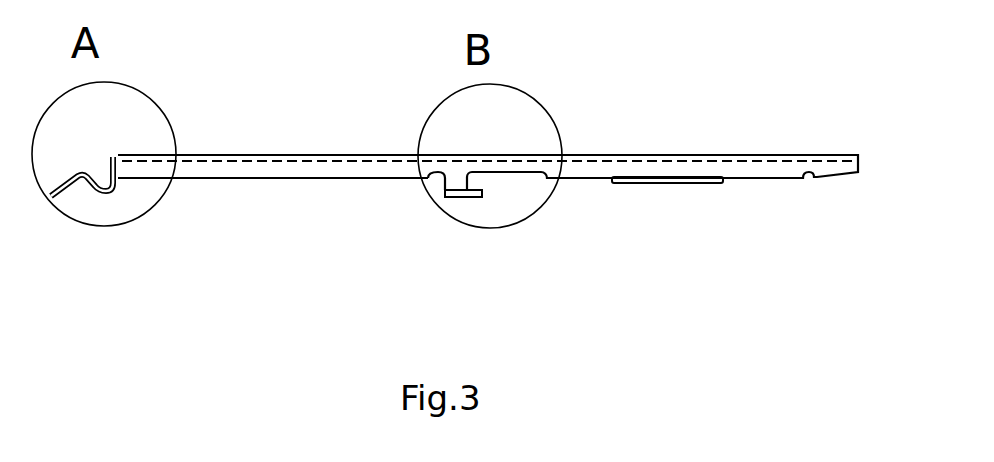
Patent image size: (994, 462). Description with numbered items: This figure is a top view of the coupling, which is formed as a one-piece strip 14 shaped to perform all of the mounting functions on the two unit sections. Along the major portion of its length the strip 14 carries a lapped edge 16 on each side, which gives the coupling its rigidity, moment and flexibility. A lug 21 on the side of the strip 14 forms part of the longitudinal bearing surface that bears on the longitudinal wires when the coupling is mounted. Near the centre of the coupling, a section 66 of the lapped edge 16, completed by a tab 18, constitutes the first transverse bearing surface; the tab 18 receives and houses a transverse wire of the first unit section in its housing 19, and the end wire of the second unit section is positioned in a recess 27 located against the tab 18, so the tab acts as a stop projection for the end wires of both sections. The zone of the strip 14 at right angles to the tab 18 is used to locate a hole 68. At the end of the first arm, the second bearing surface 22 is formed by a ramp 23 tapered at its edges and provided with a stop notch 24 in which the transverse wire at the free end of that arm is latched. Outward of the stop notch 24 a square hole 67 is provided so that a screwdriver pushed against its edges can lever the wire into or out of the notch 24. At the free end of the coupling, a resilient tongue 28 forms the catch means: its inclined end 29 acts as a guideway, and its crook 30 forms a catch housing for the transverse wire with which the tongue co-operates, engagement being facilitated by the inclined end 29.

The strip 14 is at (315, 152).
The lapped edge 16 is at (238, 167).
The tab 18 is at (483, 198).
The housing 19 is at (533, 174).
The lug 21 is at (640, 183).
The second bearing surface 22 is at (823, 208).
The ramp 23 is at (838, 178).
The stop notch 24 is at (808, 178).
The recess 27 is at (431, 187).
The resilient tongue 28 is at (90, 148).
The end of resilient tongue 29 is at (72, 186).
The crook 30 is at (98, 192).
The section of lapped edge 66 is at (491, 188).
The square hole 67 is at (820, 157).
The hole 68 is at (457, 155).